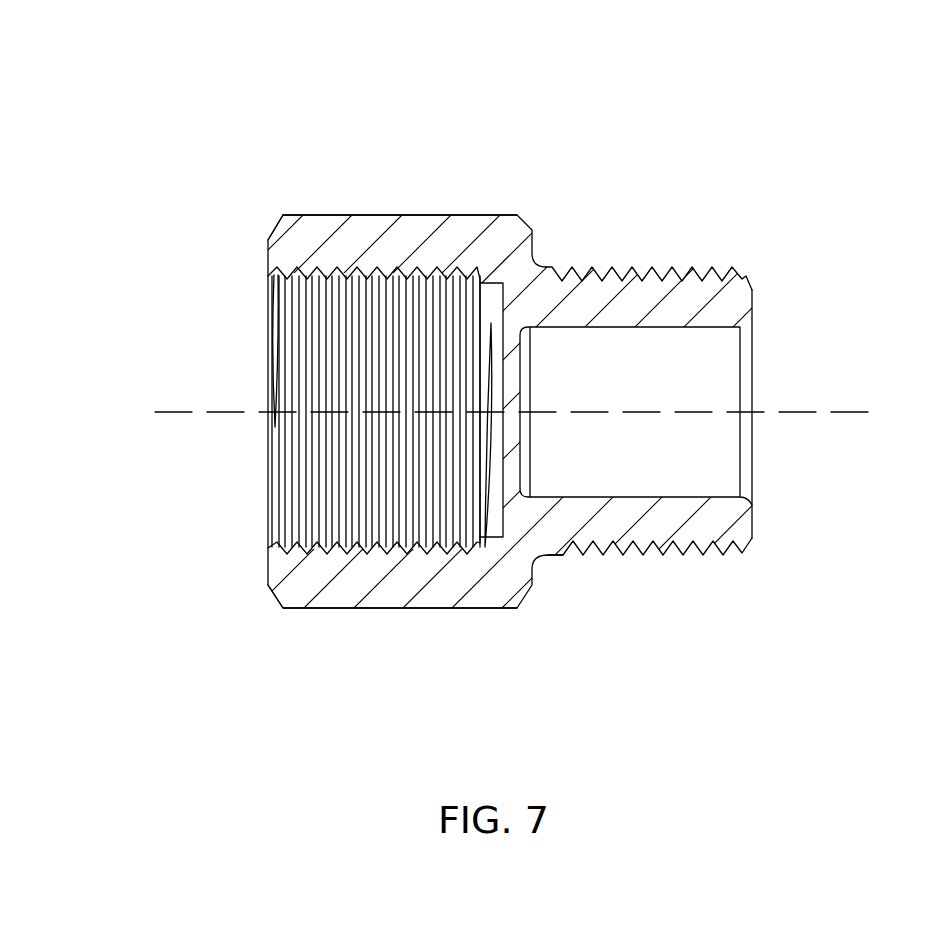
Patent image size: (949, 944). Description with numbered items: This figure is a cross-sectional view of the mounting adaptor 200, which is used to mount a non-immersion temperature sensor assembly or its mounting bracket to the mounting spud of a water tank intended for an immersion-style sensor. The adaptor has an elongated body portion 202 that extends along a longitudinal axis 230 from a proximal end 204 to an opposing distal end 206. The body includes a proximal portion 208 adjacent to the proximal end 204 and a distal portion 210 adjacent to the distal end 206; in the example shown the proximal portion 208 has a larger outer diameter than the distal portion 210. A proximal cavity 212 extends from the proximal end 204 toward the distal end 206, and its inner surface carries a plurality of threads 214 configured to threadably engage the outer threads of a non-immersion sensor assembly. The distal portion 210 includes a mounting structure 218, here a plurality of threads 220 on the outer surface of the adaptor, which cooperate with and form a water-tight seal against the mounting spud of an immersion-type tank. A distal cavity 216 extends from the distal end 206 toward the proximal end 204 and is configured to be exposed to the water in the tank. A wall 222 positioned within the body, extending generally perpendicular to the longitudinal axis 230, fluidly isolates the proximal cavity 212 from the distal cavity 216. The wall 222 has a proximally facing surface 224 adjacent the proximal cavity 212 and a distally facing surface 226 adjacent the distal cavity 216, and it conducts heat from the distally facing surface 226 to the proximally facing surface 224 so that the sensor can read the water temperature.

The mounting adaptor 200 is at (680, 132).
The elongated body portion 202 is at (400, 215).
The proximal end 204 is at (280, 236).
The distal end 206 is at (752, 297).
The proximal portion 208 is at (327, 612).
The distal portion 210 is at (740, 263).
The proximal cavity 212 is at (317, 437).
The threads 214 is at (316, 322).
The distal cavity 216 is at (722, 404).
The mounting structure 218 is at (722, 560).
The threads 220 is at (623, 555).
The wall 222 is at (510, 432).
The proximally facing surface 224 is at (503, 478).
The distally facing surface 226 is at (520, 472).
The longitudinal axis 230 is at (850, 413).